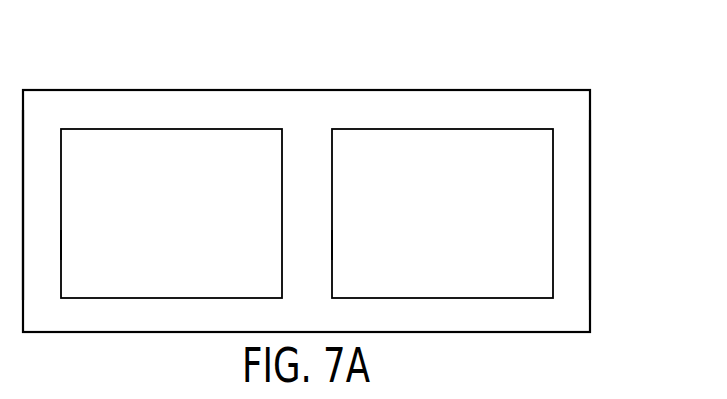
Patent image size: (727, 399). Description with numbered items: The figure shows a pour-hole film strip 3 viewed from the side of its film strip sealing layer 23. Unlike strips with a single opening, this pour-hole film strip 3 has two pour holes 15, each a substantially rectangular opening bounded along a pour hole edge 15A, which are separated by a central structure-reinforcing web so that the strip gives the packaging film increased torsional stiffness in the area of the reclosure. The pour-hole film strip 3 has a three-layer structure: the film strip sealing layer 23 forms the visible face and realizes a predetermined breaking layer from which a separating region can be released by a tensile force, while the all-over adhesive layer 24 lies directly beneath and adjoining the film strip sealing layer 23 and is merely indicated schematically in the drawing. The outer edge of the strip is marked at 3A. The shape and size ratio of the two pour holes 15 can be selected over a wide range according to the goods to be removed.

The pour-hole film strip 3 is at (304, 82).
The panel edge 3A is at (590, 172).
The pour hole 15 is at (160, 169).
The pour hole edge 15A is at (61, 245).
The film strip sealing layer 23 is at (81, 102).
The adhesive layer 24 is at (528, 98).